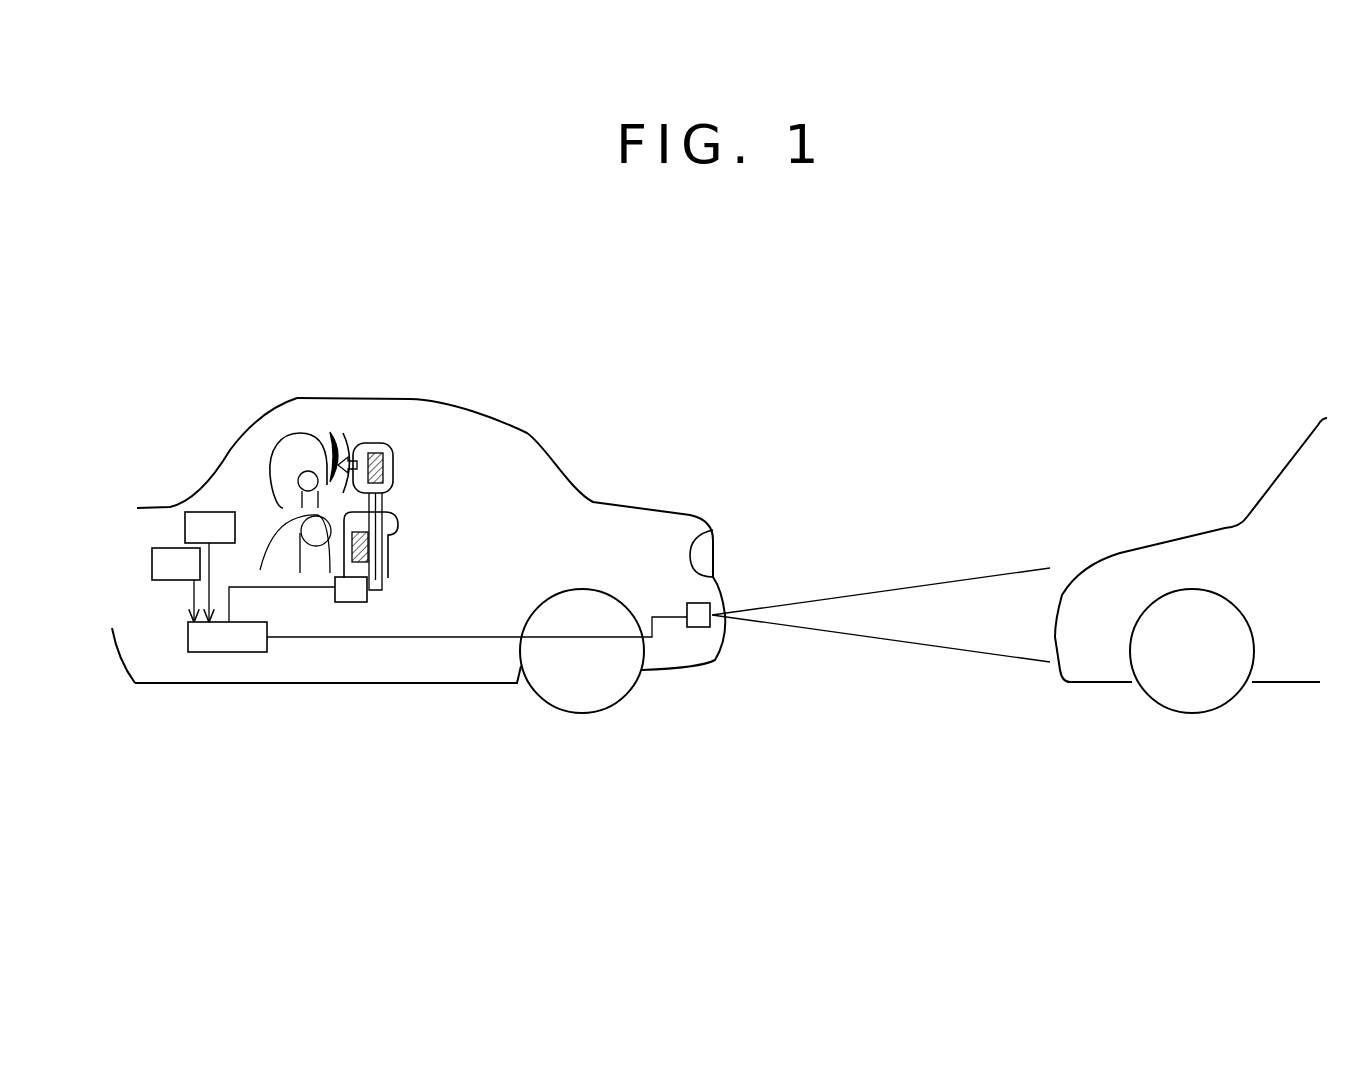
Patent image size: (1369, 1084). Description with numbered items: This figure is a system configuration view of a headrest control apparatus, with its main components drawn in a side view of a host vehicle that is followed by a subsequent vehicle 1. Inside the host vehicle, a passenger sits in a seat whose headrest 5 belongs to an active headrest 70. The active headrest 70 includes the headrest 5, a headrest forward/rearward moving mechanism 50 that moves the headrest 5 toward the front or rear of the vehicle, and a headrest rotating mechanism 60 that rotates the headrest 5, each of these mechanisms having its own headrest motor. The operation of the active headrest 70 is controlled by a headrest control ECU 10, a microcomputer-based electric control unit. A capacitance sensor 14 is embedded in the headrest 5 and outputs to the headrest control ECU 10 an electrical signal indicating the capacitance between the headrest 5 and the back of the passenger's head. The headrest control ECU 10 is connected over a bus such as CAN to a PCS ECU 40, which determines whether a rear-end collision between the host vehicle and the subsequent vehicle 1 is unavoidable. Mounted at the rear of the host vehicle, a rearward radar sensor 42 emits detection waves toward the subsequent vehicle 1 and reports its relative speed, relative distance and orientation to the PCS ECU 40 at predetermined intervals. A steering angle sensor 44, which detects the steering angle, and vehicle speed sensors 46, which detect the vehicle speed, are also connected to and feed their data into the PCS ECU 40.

The subsequent vehicle 1 is at (1261, 487).
The headrest 5 is at (352, 432).
The headrest control ECU 10 is at (367, 597).
The capacitance sensor 14 is at (337, 440).
The PCS ECU 40 is at (253, 652).
The rearward radar sensor 42 is at (700, 627).
The steering angle sensor 44 is at (210, 512).
The vehicle speed sensors 46 is at (152, 563).
The headrest forward/rearward moving mechanism 50 is at (382, 446).
The headrest rotating mechanism 60 is at (372, 557).
The active headrest 70 is at (377, 427).